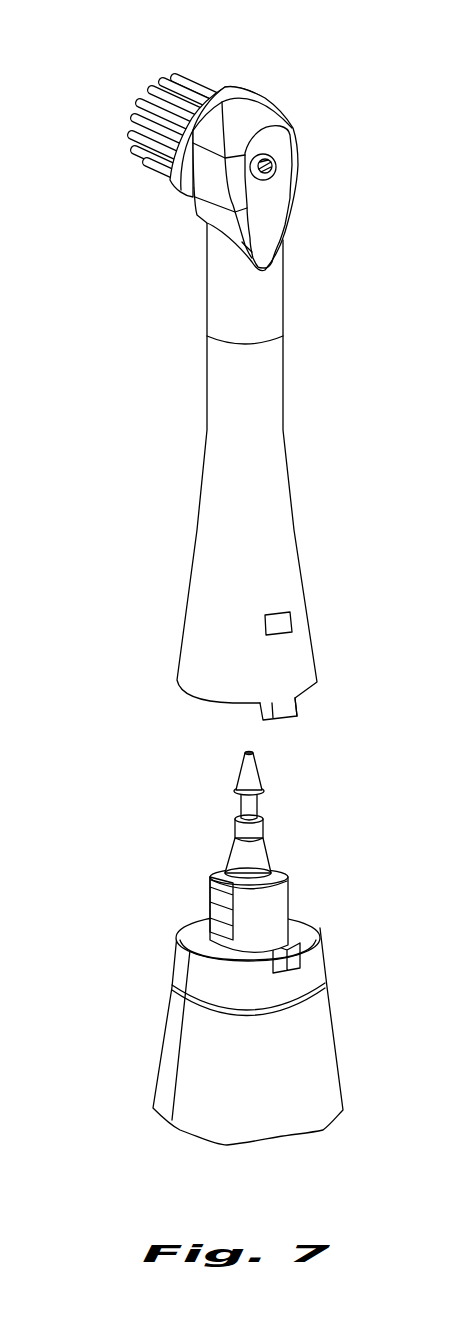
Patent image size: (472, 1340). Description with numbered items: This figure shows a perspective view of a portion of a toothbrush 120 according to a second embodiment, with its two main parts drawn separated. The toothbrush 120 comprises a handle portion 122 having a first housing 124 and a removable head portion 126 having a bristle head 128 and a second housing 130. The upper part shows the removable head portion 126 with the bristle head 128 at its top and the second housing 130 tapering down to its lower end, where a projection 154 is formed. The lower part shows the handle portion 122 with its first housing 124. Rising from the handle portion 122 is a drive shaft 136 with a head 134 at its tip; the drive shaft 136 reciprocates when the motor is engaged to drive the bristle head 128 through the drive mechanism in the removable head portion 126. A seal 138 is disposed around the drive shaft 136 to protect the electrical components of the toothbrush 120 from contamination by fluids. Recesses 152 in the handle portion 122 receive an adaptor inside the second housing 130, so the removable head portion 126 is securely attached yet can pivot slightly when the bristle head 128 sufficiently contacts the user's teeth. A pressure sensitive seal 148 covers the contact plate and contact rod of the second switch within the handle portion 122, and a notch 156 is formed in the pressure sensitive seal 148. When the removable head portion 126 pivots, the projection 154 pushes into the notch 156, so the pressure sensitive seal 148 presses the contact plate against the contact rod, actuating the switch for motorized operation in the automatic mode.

The toothbrush 120 is at (237, 579).
The handle portion 122 is at (270, 949).
The first housing 124 is at (345, 1088).
The removable head portion 126 is at (266, 382).
The bristle head 128 is at (218, 90).
The second housing 130 is at (210, 437).
The head 134 is at (257, 775).
The drive shaft 136 is at (260, 810).
The seal 138 is at (268, 848).
The pressure sensitive seal 148 is at (180, 957).
The recesses 152 is at (217, 905).
The projection 154 is at (297, 715).
The notch 156 is at (303, 960).